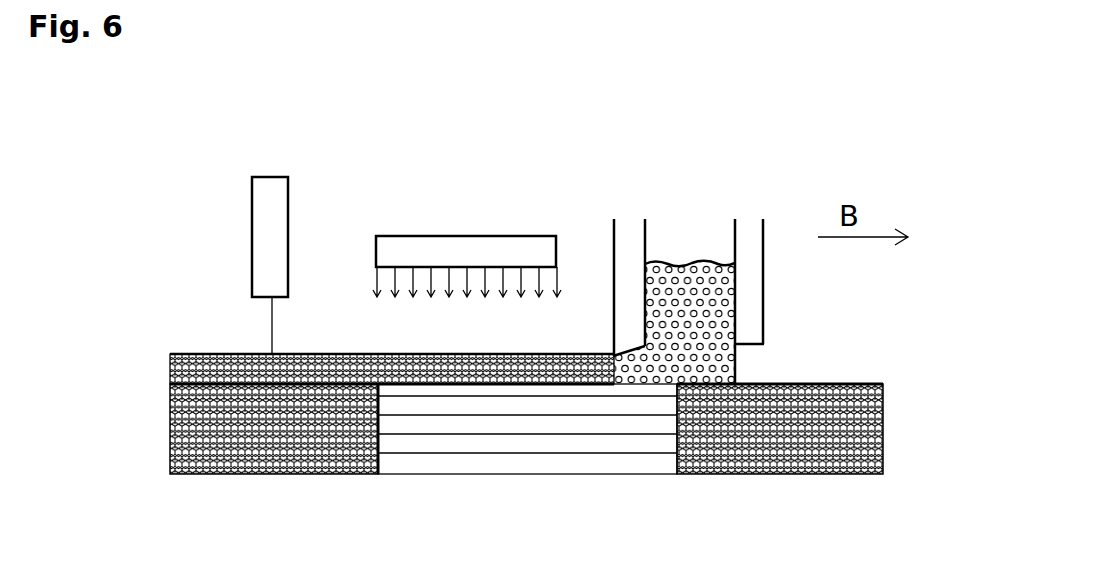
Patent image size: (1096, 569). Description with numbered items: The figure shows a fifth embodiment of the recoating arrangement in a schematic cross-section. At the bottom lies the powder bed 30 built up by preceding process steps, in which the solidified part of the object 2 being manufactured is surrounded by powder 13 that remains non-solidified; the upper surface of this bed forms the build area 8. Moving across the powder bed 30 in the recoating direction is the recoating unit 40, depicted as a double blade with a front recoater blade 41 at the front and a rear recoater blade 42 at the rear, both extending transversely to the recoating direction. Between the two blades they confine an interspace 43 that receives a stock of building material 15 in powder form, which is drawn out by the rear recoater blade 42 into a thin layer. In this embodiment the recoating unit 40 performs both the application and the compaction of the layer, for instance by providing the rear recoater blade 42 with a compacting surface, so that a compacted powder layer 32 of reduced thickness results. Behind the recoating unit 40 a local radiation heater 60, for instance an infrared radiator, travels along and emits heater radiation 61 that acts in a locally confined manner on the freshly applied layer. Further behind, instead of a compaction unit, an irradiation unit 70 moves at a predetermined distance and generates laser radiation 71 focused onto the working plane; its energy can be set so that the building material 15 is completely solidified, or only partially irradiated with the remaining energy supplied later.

The object 2 is at (503, 443).
The build area 8 is at (852, 382).
The powder 13 is at (243, 450).
The building material 15 is at (693, 307).
The powder bed 30 is at (170, 463).
The compacted powder layer 32 is at (218, 352).
The recoating unit 40 is at (702, 284).
The front recoater blade 41 is at (757, 325).
The rear recoater blade 42 is at (614, 308).
The interspace 43 is at (768, 292).
The local radiation heater 60 is at (447, 248).
The heater radiation 61 is at (488, 297).
The irradiation unit 70 is at (270, 257).
The laser radiation 71 is at (272, 323).